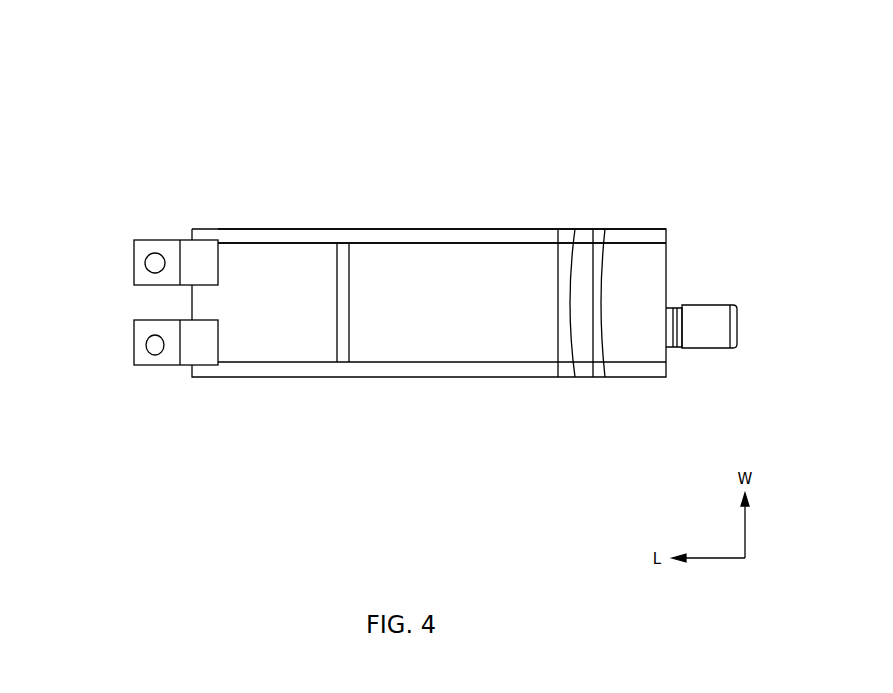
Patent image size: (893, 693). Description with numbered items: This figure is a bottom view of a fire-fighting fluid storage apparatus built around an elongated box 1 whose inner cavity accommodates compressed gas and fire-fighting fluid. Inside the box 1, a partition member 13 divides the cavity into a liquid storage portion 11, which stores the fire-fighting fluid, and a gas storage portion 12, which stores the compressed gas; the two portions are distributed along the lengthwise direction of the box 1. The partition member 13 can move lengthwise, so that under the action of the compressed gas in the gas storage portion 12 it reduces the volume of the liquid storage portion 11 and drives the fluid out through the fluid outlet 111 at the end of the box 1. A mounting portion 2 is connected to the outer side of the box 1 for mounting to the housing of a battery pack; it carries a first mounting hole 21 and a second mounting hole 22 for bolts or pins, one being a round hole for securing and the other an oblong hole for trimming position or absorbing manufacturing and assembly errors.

The box 1 is at (148, 78).
The mounting portion 2 is at (195, 250).
The liquid storage portion 11 is at (455, 352).
The gas storage portion 12 is at (278, 252).
The partition member 13 is at (340, 352).
The first mounting hole 21 is at (153, 268).
The second mounting hole 22 is at (154, 345).
The fluid outlet 111 is at (706, 335).